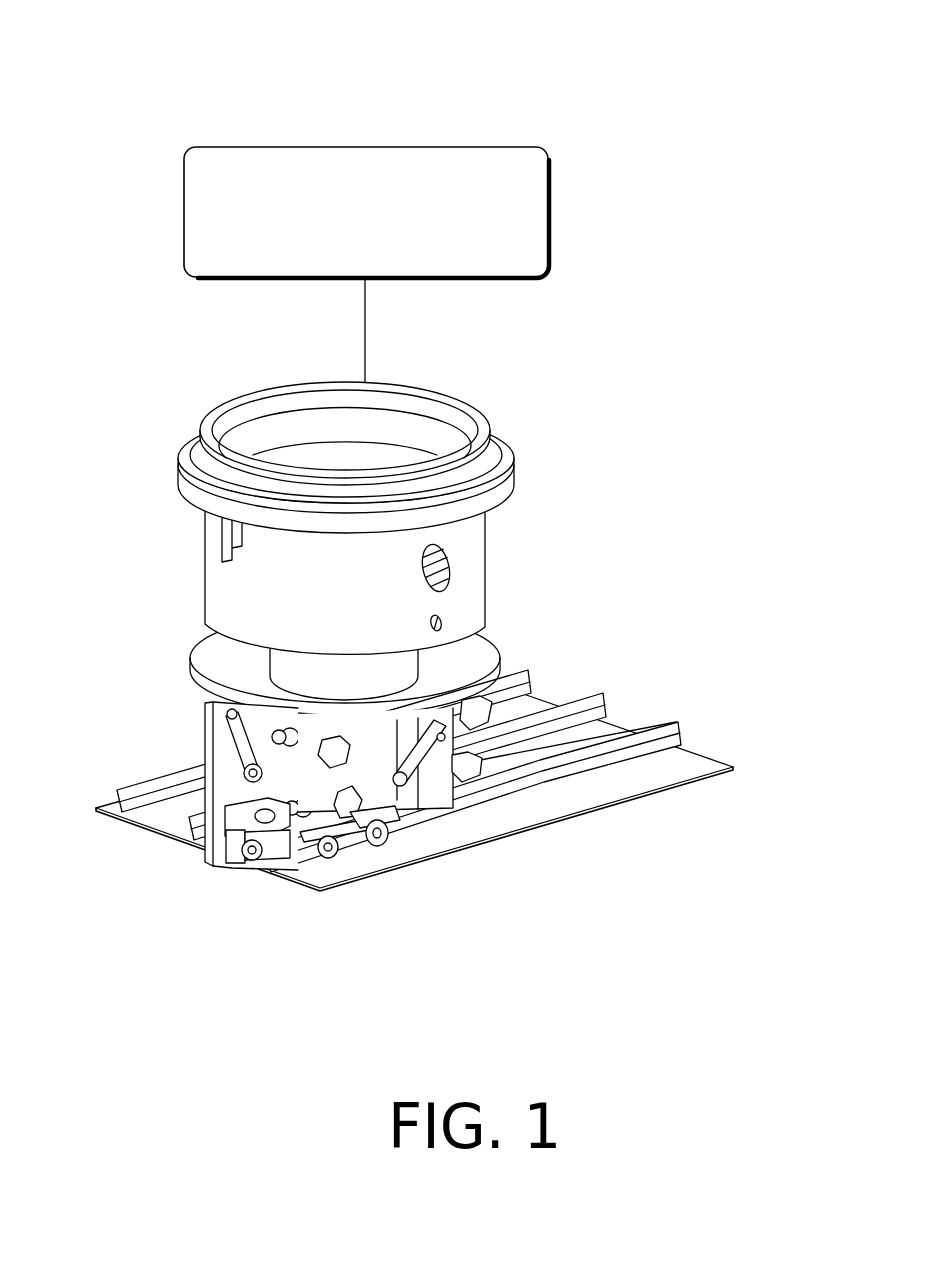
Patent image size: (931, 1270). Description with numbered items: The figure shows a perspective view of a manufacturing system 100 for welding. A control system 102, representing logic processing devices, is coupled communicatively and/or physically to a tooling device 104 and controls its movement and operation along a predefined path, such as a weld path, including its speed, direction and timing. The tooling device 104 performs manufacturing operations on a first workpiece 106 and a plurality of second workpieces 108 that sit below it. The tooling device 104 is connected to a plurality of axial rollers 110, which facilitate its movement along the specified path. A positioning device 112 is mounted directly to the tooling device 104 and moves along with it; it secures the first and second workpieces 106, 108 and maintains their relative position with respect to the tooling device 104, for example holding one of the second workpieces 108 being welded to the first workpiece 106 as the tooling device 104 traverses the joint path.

The manufacturing system 100 is at (719, 68).
The control system 102 is at (383, 237).
The tooling device 104 is at (473, 394).
The first workpiece 106 is at (707, 760).
The second workpieces 108 is at (673, 707).
The axial rollers 110 is at (380, 838).
The positioning device 112 is at (222, 757).